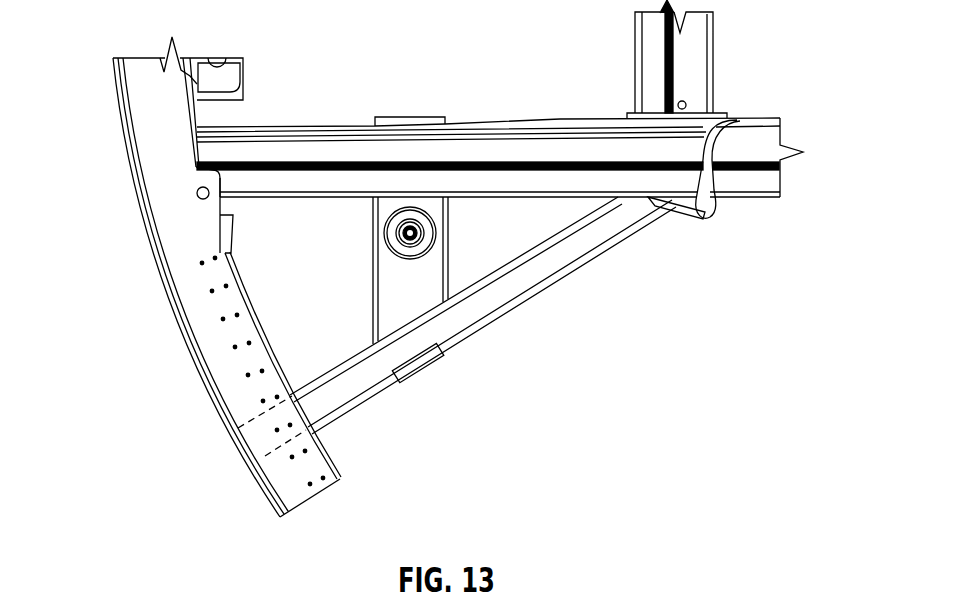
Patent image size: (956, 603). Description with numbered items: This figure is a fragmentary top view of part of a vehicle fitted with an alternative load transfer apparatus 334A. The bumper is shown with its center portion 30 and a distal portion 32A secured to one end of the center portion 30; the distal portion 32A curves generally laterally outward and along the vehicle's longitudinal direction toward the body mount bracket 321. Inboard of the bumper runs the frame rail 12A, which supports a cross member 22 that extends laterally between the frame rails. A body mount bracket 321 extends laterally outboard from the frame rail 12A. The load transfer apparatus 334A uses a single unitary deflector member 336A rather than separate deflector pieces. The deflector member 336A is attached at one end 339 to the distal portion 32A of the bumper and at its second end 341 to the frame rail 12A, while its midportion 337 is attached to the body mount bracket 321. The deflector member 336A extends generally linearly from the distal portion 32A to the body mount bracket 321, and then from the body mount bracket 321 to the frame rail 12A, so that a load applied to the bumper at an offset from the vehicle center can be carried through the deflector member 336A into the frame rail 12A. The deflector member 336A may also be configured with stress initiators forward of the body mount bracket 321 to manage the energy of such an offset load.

The center portion 30 is at (117, 87).
The distal portion 32A is at (217, 403).
The one end 339 is at (234, 446).
The frame rail 12A is at (519, 128).
The cross member 22 is at (698, 57).
The body mount bracket 321 is at (390, 298).
The load transfer apparatus 334A is at (495, 315).
The unitary deflector member 336A is at (540, 292).
The midportion 337 is at (408, 350).
The second end 341 is at (653, 198).